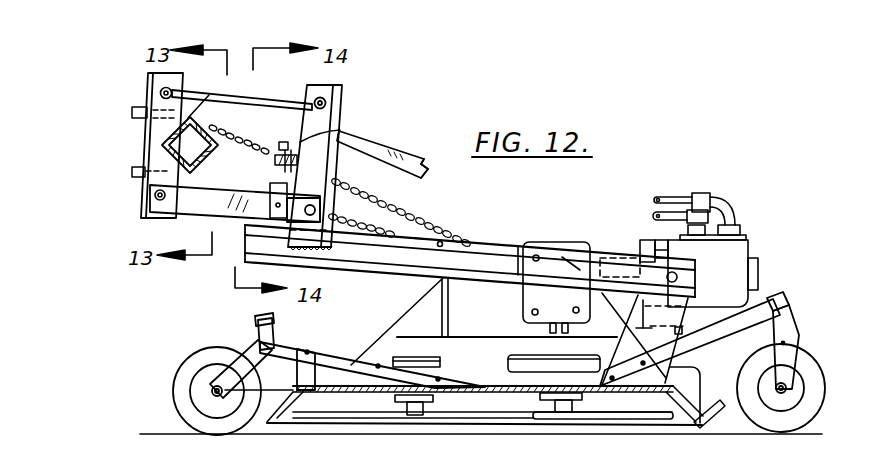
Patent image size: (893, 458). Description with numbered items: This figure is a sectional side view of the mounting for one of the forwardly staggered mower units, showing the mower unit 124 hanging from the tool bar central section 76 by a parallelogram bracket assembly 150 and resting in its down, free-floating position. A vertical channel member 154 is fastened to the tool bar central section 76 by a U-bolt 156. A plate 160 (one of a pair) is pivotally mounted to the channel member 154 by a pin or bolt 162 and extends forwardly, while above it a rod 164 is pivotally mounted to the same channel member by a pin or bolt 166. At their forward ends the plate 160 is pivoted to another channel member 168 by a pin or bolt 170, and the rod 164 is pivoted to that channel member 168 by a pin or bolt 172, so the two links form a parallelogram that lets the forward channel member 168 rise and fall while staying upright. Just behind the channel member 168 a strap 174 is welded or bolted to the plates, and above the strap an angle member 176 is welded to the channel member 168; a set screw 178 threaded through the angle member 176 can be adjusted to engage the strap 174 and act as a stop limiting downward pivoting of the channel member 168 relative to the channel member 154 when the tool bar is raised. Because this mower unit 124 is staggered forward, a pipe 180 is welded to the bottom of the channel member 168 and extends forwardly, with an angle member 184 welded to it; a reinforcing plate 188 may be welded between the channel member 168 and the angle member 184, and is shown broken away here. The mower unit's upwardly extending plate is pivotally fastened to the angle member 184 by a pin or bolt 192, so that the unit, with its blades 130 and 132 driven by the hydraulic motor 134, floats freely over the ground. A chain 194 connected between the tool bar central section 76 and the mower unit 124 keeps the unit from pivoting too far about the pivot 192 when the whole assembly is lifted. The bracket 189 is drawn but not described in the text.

The tool bar central section 76 is at (155, 145).
The mower unit 124 is at (378, 343).
The blade 130 is at (377, 415).
The blade 132 is at (607, 419).
The hydraulic motor 134 is at (738, 262).
The parallelogram bracket assembly 150 is at (133, 214).
The vertical channel member 154 is at (132, 143).
The U-bolt 156 is at (218, 89).
The plate 160 is at (235, 213).
The pin or bolt 162 is at (154, 194).
The rod 164 is at (265, 93).
The pin or bolt 166 is at (160, 96).
The channel member 168 is at (382, 152).
The pin or bolt 170 is at (401, 209).
The pin or bolt 172 is at (342, 167).
The strap 174 is at (256, 189).
The angle member 176 is at (343, 130).
The set screw 178 is at (487, 285).
The pipe 180 is at (470, 265).
The angle member 184 is at (437, 244).
The reinforcing plate 188 is at (441, 154).
The support bracket 189 is at (675, 323).
The pin or bolt 192 is at (680, 277).
The chain 194 is at (418, 236).